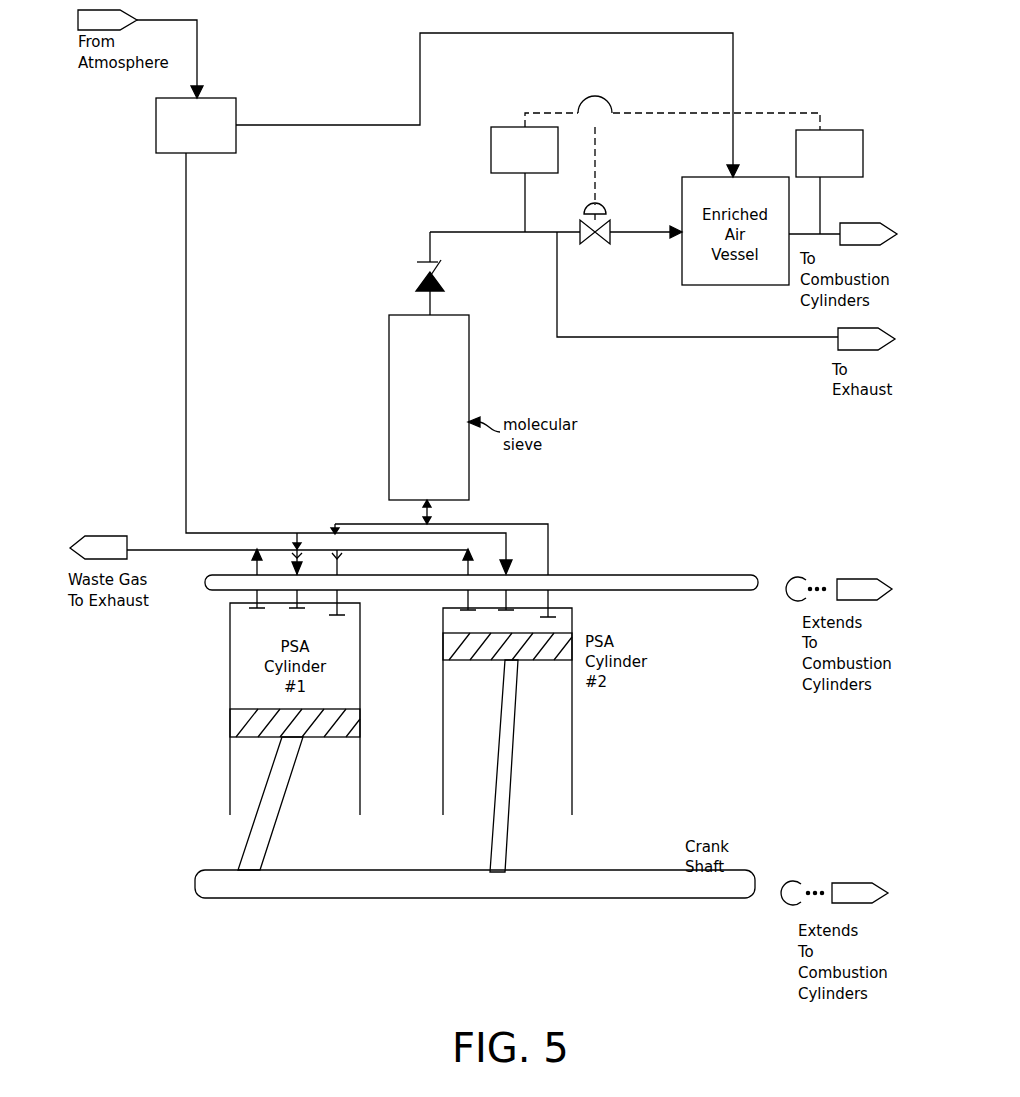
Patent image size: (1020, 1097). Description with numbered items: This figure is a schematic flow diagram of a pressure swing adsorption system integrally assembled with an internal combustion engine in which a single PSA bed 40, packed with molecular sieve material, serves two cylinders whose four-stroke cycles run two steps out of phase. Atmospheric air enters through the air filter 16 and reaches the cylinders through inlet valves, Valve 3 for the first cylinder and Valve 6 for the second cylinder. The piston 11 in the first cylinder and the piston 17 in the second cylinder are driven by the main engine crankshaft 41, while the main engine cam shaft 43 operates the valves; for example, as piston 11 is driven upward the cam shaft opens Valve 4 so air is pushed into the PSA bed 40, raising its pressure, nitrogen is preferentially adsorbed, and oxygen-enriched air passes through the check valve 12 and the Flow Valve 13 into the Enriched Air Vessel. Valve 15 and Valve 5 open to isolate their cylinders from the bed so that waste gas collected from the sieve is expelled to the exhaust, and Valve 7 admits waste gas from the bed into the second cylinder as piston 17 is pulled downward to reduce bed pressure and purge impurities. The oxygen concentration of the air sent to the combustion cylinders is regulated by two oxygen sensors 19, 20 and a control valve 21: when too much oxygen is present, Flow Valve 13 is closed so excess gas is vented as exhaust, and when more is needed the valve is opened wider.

The air filter 16 is at (236, 115).
The oxygen sensor 19 is at (503, 127).
The control valve 21 is at (600, 97).
The oxygen sensor 20 is at (848, 145).
The flow valve 13 is at (605, 212).
The check valve 12 is at (440, 262).
The PSA bed 40 is at (429, 407).
The main engine cam shaft 43 is at (625, 578).
The valve 15 is at (256, 591).
The valve 3 is at (305, 597).
The valve 4 is at (340, 596).
The valve 5 is at (462, 597).
The valve 6 is at (508, 598).
The valve 7 is at (556, 598).
The piston 11 is at (272, 807).
The piston 17 is at (505, 797).
The main engine crankshaft 41 is at (630, 890).